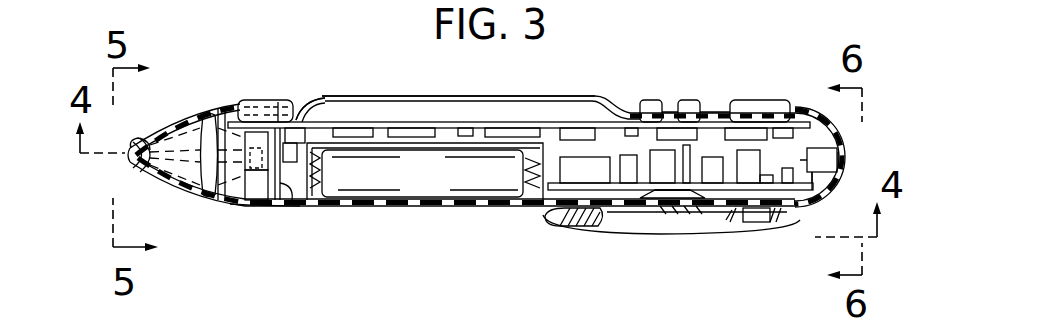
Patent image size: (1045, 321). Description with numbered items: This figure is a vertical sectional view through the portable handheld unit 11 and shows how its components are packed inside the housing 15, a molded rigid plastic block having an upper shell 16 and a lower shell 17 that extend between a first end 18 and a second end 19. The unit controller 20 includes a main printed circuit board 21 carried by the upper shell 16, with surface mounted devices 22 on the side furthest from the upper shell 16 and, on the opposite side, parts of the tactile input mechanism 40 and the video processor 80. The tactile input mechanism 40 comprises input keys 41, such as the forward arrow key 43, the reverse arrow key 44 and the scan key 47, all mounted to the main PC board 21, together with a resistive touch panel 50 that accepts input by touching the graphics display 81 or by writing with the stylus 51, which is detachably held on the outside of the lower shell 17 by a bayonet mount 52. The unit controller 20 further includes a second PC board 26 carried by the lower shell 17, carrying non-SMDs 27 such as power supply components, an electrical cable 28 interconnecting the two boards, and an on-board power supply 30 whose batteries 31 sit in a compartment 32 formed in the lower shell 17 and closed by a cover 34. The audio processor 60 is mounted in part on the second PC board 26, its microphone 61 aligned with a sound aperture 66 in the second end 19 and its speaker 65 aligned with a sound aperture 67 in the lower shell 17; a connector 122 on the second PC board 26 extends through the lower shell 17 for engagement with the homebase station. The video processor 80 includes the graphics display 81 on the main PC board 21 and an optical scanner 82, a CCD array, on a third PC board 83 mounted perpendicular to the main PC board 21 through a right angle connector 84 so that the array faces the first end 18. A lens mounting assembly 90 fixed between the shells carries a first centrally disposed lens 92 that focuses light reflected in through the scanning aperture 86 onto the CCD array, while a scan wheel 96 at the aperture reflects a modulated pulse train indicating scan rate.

The portable unit 11 is at (605, 70).
The housing 15 is at (282, 222).
The upper shell 16 is at (327, 100).
The lower shell 17 is at (230, 204).
The first end 18 is at (140, 172).
The second end 19 is at (853, 135).
The unit controller 20 is at (380, 106).
The main printed circuit board 21 is at (455, 127).
The surface mounted devices 22 is at (580, 133).
The second PC board 26 is at (563, 188).
The non-SMDs 27 is at (603, 175).
The electrical cable 28 is at (788, 165).
The on-board power supply 30 is at (417, 194).
The batteries 31 is at (438, 190).
The compartment 32 is at (317, 195).
The cover 34 is at (483, 206).
The tactile input mechanism 40 is at (707, 83).
The input keys 41 is at (756, 88).
The forward arrow key 43 is at (687, 100).
The reverse arrow key 44 is at (652, 100).
The scan key 47 is at (276, 100).
The resistive touch panel 50 is at (399, 96).
The stylus 51 is at (657, 234).
The bayonet mount 52 is at (763, 223).
The audio processor 60 is at (817, 130).
The microphone 61 is at (823, 172).
The speaker 65 is at (692, 212).
The sound aperture 66 is at (855, 158).
The sound aperture 67 is at (670, 212).
The video processor 80 is at (257, 120).
The graphics display 81 is at (507, 110).
The optical scanner 82 is at (258, 172).
The third PC board 83 is at (297, 200).
The right angle connector 84 is at (313, 143).
The scanning aperture 86 is at (140, 140).
The lens mounting assembly 90 is at (208, 113).
The first centrally disposed lens 92 is at (200, 165).
The scan wheel 96 is at (132, 157).
The connector 122 is at (583, 204).